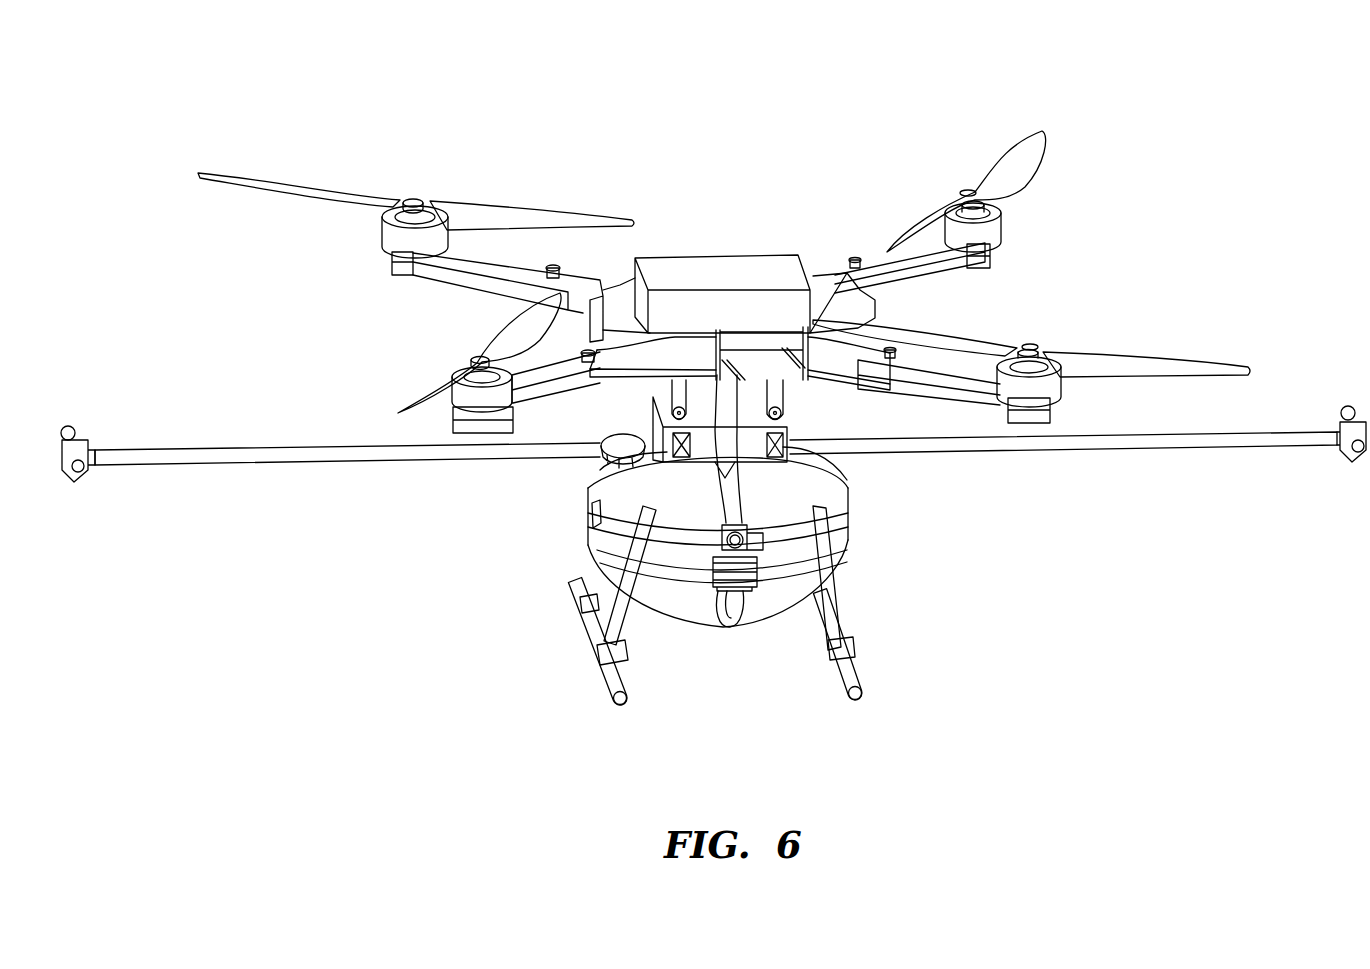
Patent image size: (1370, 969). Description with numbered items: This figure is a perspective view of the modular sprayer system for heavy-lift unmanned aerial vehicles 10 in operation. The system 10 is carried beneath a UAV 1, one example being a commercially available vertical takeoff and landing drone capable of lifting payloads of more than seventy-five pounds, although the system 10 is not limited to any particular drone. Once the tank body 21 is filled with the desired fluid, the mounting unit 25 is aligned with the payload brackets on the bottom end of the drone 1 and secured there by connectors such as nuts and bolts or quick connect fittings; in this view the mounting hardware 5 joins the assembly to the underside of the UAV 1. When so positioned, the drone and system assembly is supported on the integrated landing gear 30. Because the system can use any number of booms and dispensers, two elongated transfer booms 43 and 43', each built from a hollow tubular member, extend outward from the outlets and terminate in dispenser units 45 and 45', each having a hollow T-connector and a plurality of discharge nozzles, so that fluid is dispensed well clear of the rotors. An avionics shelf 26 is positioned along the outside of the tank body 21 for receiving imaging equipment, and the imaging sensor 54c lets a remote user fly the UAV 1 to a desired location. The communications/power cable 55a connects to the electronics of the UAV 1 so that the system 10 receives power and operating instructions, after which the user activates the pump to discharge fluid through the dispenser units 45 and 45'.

The modular sprayer system 10 is at (555, 152).
The UAV 1 is at (720, 238).
The hanger bracket 5 is at (670, 412).
The mounting bracket 25 is at (655, 462).
The communications/power cable 55a is at (703, 533).
The tank body 21 is at (860, 522).
The imaging sensor 54c is at (765, 560).
The avionics shelf 26 is at (747, 607).
The integrated landing gear 30 is at (608, 718).
The elongated transfer boom 43 is at (1063, 483).
The elongated transfer boom 43' is at (347, 403).
The fluid dispenser unit 45 is at (1335, 380).
The fluid dispenser unit 45' is at (88, 399).